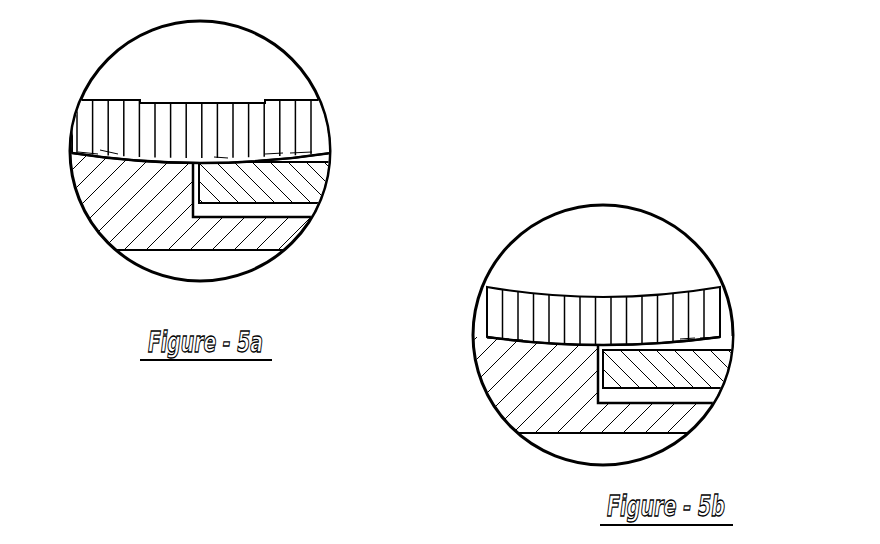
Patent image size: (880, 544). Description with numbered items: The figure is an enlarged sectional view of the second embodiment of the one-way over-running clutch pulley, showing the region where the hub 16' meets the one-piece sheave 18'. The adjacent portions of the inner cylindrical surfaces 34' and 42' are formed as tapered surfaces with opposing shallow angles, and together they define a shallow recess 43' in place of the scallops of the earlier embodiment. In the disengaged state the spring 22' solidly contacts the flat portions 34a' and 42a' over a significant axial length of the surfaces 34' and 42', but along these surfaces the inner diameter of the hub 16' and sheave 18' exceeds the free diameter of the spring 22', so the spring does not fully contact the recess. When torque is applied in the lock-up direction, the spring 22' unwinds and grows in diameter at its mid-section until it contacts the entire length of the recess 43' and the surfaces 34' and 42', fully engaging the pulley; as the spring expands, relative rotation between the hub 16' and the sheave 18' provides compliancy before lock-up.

In FIG. 5A, the hub 16' is at (303, 182).
In FIG. 5B, the hub 16' is at (706, 369).
In FIG. 5A, the sheave 18' is at (189, 200).
In FIG. 5B, the sheave 18' is at (594, 385).
In FIG. 5A, the spring 22' is at (213, 96).
In FIG. 5B, the spring 22' is at (624, 277).
In FIG. 5A, the inner cylindrical surface 34' is at (337, 125).
In FIG. 5B, the inner cylindrical surface 34' is at (740, 285).
In FIG. 5A, the flat portion 34a' is at (381, 143).
In FIG. 5B, the flat portion 34a' is at (760, 316).
In FIG. 5A, the inner cylindrical surface 42' is at (74, 114).
In FIG. 5B, the inner cylindrical surface 42' is at (479, 299).
In FIG. 5A, the flat portion 42a' is at (59, 148).
In FIG. 5B, the flat portion 42a' is at (434, 332).
In FIG. 5A, the recess 43' is at (224, 231).
In FIG. 5B, the recess 43' is at (627, 419).